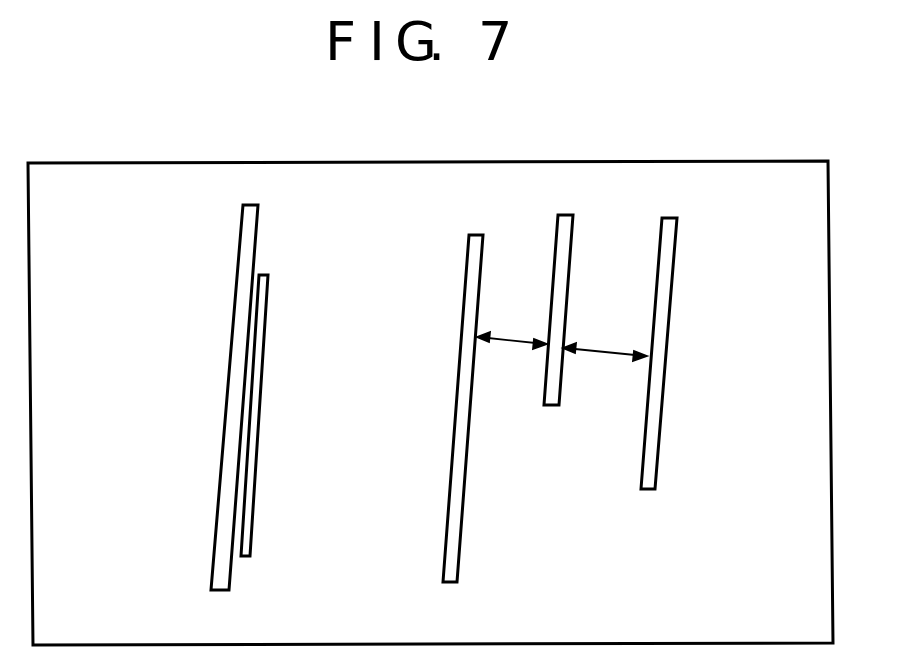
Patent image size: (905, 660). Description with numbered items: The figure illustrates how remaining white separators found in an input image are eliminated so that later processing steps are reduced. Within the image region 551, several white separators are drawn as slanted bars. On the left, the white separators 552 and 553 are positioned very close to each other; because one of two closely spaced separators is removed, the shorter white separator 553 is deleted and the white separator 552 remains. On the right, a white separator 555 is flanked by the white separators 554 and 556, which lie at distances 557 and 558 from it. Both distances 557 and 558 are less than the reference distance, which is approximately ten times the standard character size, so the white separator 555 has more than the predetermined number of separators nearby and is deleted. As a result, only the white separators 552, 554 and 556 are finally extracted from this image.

The substrate / frame 551 is at (275, 163).
The white separator 552 is at (237, 285).
The white separator 553 is at (264, 346).
The white separator 554 is at (458, 345).
The white separator 555 is at (572, 237).
The white separator 556 is at (669, 349).
The distance 557 is at (515, 342).
The distance 558 is at (603, 357).